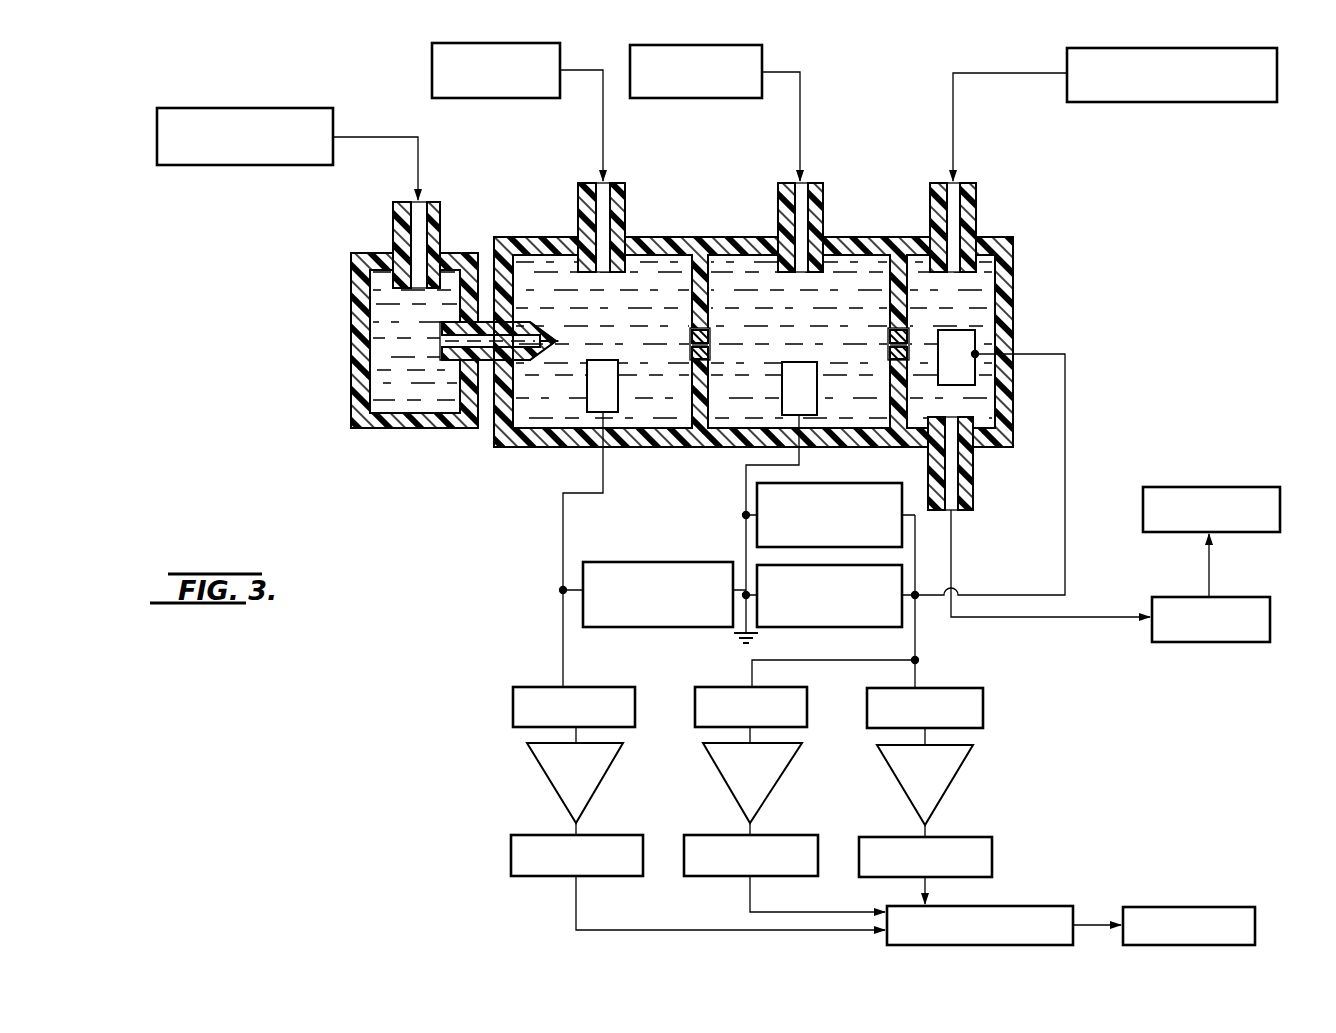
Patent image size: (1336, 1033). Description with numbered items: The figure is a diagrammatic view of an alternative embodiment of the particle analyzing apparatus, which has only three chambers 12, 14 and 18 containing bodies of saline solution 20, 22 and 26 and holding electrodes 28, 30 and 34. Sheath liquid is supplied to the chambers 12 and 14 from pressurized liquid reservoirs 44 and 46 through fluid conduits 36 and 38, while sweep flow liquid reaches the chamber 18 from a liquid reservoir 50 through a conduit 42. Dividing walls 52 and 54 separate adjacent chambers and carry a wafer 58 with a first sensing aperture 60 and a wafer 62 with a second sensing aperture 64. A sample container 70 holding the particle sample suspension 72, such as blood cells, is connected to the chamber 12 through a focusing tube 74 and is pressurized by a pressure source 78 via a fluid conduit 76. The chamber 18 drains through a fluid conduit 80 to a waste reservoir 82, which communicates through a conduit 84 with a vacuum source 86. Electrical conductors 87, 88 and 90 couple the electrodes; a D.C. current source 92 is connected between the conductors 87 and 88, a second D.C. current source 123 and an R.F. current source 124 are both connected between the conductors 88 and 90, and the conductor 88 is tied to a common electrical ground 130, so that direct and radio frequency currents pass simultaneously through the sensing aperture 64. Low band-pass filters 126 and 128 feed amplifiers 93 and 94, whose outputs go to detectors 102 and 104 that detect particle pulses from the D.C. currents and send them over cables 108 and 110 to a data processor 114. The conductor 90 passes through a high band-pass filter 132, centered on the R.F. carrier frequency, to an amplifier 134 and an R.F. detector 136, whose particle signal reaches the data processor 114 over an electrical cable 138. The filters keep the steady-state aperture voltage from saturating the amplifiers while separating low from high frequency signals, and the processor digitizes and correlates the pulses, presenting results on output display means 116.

The chamber 12 is at (526, 422).
The chamber 14 is at (726, 426).
The chamber 18 is at (981, 418).
The body of saline solution 20 is at (668, 314).
The body of saline solution 22 is at (822, 314).
The body of saline solution 26 is at (988, 314).
The electrode 28 is at (599, 360).
The electrode 30 is at (789, 362).
The electrode 34 is at (950, 330).
The fluid conduit 36 is at (572, 72).
The fluid conduit 38 is at (781, 72).
The fluid conduit 42 is at (989, 73).
The pressurized liquid reservoir 44 is at (517, 43).
The pressurized liquid reservoir 46 is at (722, 45).
The liquid reservoir 50 is at (1187, 48).
The dividing wall 52 is at (708, 306).
The dividing wall 54 is at (890, 390).
The wafer 58 is at (710, 336).
The first sensing aperture 60 is at (708, 344).
The wafer 62 is at (890, 334).
The second sensing aperture 64 is at (890, 351).
The sample container 70 is at (431, 408).
The particle sample suspension 72 is at (415, 336).
The focusing tube 74 is at (521, 326).
The fluid conduit 76 is at (368, 137).
The pressure source 78 is at (243, 108).
The fluid conduit 80 is at (973, 490).
The waste reservoir 82 is at (1155, 597).
The conduit 84 is at (1219, 588).
The vacuum source 86 is at (1238, 487).
The electrical conductor 87 is at (603, 478).
The electrical conductor 88 is at (756, 464).
The electrical conductor 90 is at (1065, 452).
The D.C. current source 92 is at (668, 566).
The amplifier 93 is at (604, 794).
The amplifier 94 is at (779, 794).
The detector 102 is at (526, 835).
The detector 104 is at (711, 835).
The cable 108 is at (575, 911).
The cable 110 is at (750, 900).
The data processor 114 is at (1028, 906).
The output display means 116 is at (1198, 907).
The second D.C. current source 123 is at (850, 636).
The R.F. current source 124 is at (849, 486).
The low band-pass filter 126 is at (514, 686).
The low band-pass filter 128 is at (802, 694).
The common electrical ground 130 is at (730, 641).
The high band-pass filter 132 is at (967, 686).
The amplifier 134 is at (959, 794).
The R.F. detector 136 is at (884, 837).
The electrical cable 138 is at (918, 889).